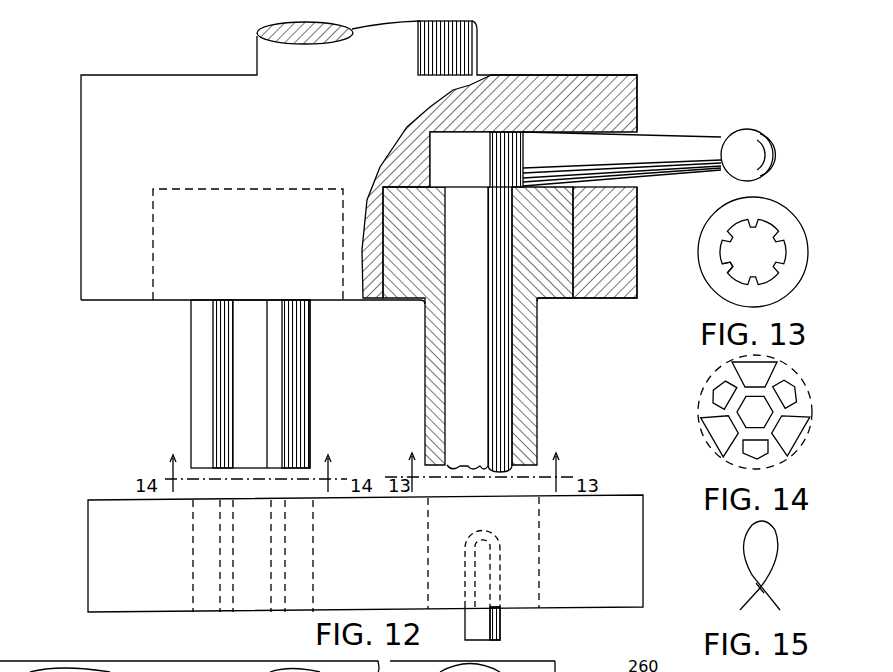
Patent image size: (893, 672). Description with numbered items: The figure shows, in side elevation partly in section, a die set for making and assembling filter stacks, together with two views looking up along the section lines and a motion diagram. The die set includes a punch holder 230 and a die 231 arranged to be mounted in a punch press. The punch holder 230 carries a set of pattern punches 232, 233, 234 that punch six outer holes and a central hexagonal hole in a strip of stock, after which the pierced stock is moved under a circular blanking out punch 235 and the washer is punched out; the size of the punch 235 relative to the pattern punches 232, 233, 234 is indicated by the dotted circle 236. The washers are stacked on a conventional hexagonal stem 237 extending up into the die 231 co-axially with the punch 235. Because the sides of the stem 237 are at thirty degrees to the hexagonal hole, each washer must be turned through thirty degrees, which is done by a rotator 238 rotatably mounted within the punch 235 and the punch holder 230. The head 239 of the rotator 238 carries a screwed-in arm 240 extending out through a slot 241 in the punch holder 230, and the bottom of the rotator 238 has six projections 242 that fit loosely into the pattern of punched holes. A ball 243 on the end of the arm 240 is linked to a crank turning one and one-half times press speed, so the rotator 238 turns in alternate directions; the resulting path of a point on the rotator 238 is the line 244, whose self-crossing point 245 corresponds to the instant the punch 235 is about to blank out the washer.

In FIG. 12, the punch holder 230 is at (98, 180).
In FIG. 12, the die 231 is at (105, 531).
In FIG. 12, the pattern punch 232 is at (203, 348).
In FIG. 14, the pattern punch 232 is at (737, 366).
In FIG. 12, the pattern punch 233 is at (255, 363).
In FIG. 14, the pattern punch 233 is at (725, 398).
In FIG. 14, the pattern punch 234 is at (762, 416).
In FIG. 12, the circular punch 235 is at (530, 401).
In FIG. 13, the circular punch 235 is at (793, 228).
In FIG. 14, the dotted circle 236 is at (795, 377).
In FIG. 12, the hexagonal stem 237 is at (485, 626).
In FIG. 12, the rotator 238 is at (478, 341).
In FIG. 13, the rotator 238 is at (765, 232).
In FIG. 12, the head 239 is at (475, 142).
In FIG. 12, the arm 240 is at (666, 141).
In FIG. 12, the slot 241 is at (648, 130).
In FIG. 13, the projections 242 is at (725, 265).
In FIG. 12, the ball 243 is at (752, 138).
In FIG. 15, the line of motion 244 is at (778, 555).
In FIG. 15, the crossing point 245 is at (762, 588).